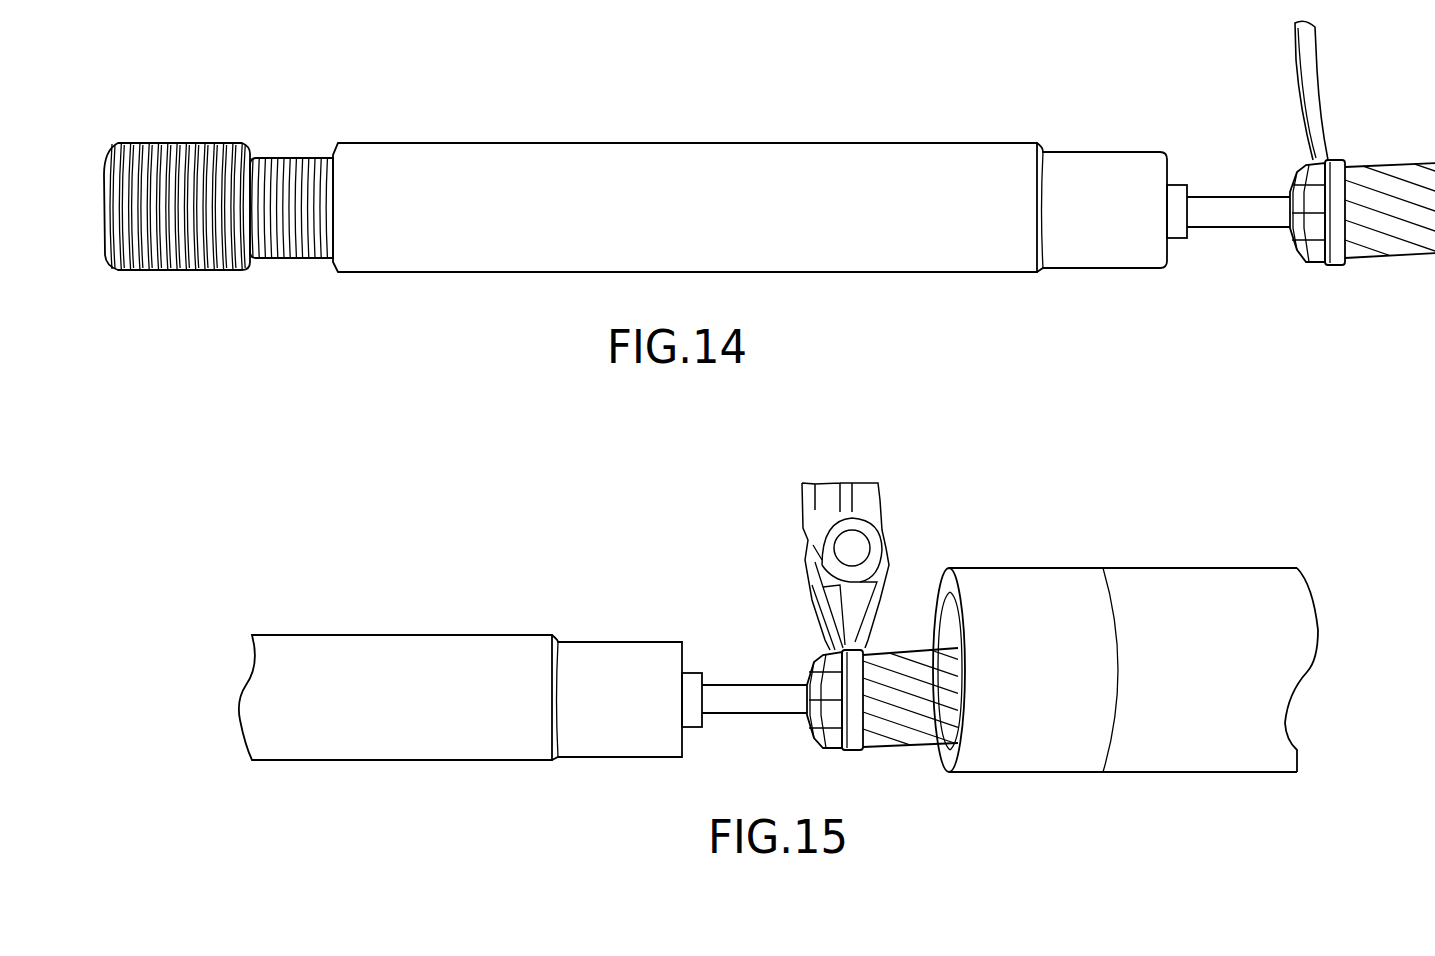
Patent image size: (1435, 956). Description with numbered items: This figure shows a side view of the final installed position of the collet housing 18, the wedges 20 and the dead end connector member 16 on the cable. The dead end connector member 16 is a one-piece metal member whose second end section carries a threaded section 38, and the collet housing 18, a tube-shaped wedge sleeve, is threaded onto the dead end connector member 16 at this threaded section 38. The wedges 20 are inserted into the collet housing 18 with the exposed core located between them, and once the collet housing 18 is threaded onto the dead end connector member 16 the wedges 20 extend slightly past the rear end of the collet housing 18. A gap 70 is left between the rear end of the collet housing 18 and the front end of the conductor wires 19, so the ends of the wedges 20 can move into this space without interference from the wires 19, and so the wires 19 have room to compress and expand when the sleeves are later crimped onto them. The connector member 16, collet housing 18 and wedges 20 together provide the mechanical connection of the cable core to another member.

The dead end connector member 16 is at (188, 272).
The threaded section 38 is at (292, 258).
The collet housing 18 is at (525, 143).
The wedges 20 is at (1188, 187).
The gap 70 is at (1183, 251).
The conductor wires 19 is at (1377, 188).